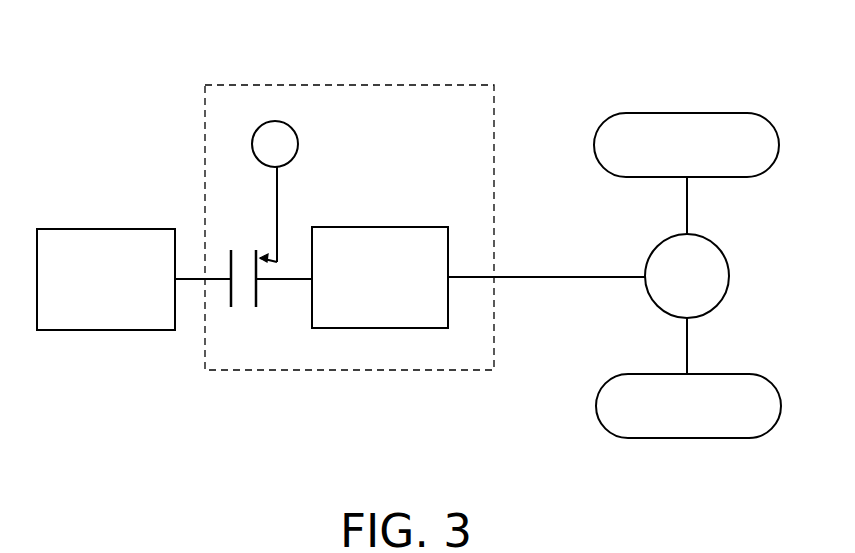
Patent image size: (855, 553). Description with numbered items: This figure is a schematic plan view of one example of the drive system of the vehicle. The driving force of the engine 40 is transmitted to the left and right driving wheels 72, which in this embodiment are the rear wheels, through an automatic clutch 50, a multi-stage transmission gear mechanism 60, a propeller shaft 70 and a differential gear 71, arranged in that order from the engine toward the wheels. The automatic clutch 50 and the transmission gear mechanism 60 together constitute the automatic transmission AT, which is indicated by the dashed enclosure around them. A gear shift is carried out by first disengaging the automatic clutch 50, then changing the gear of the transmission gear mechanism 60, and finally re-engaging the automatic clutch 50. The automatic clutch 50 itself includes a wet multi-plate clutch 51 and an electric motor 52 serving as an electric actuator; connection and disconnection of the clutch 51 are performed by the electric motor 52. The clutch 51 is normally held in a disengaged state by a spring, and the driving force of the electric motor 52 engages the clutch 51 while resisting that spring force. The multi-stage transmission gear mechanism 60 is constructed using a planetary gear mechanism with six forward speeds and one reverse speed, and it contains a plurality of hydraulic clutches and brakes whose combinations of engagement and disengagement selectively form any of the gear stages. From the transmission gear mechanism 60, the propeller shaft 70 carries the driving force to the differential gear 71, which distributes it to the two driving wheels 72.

The automatic transmission AT is at (388, 78).
The engine 40 is at (77, 320).
The automatic clutch 50 is at (244, 315).
The wet multi-plate clutch 51 is at (262, 300).
The electric motor 52 is at (271, 122).
The multi-stage transmission gear mechanism 60 is at (410, 318).
The propeller shaft 70 is at (558, 280).
The differential gear 71 is at (723, 275).
The driving wheels 72 is at (703, 122).